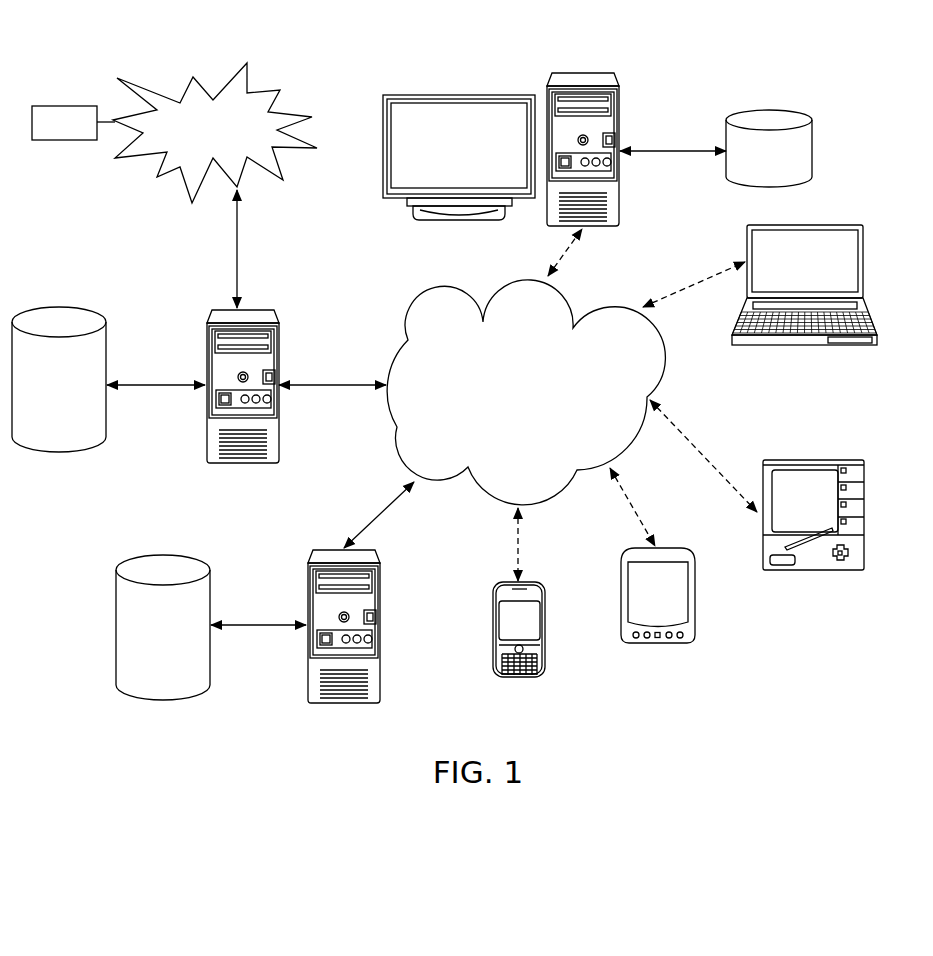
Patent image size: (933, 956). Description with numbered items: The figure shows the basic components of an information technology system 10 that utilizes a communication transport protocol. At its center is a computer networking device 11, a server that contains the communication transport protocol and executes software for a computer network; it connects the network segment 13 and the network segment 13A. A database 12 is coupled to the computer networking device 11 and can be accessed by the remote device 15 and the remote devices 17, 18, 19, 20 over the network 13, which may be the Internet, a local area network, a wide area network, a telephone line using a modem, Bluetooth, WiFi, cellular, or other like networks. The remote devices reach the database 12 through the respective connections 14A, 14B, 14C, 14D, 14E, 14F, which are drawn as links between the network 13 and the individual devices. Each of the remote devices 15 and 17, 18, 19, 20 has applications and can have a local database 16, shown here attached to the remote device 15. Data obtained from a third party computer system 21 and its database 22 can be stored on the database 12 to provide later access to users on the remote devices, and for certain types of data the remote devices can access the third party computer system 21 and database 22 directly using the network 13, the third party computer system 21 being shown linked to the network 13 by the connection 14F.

The information technology system 10 is at (866, 58).
The computer networking device 11 is at (262, 308).
The database 12 is at (68, 307).
The network 13 is at (427, 300).
The network segment 13A is at (283, 92).
The connection 14A is at (560, 257).
The connection 14B is at (683, 292).
The connection 14C is at (697, 446).
The connection 14D is at (645, 518).
The connection 14E is at (521, 545).
The connection 14F is at (385, 505).
The remote device 15 is at (63, 141).
The local database 16 is at (813, 151).
The remote device 17 is at (865, 265).
The remote device 18 is at (830, 460).
The remote device 19 is at (697, 606).
The remote device 20 is at (490, 650).
The third party computer system 21 is at (383, 645).
The database 22 is at (160, 554).